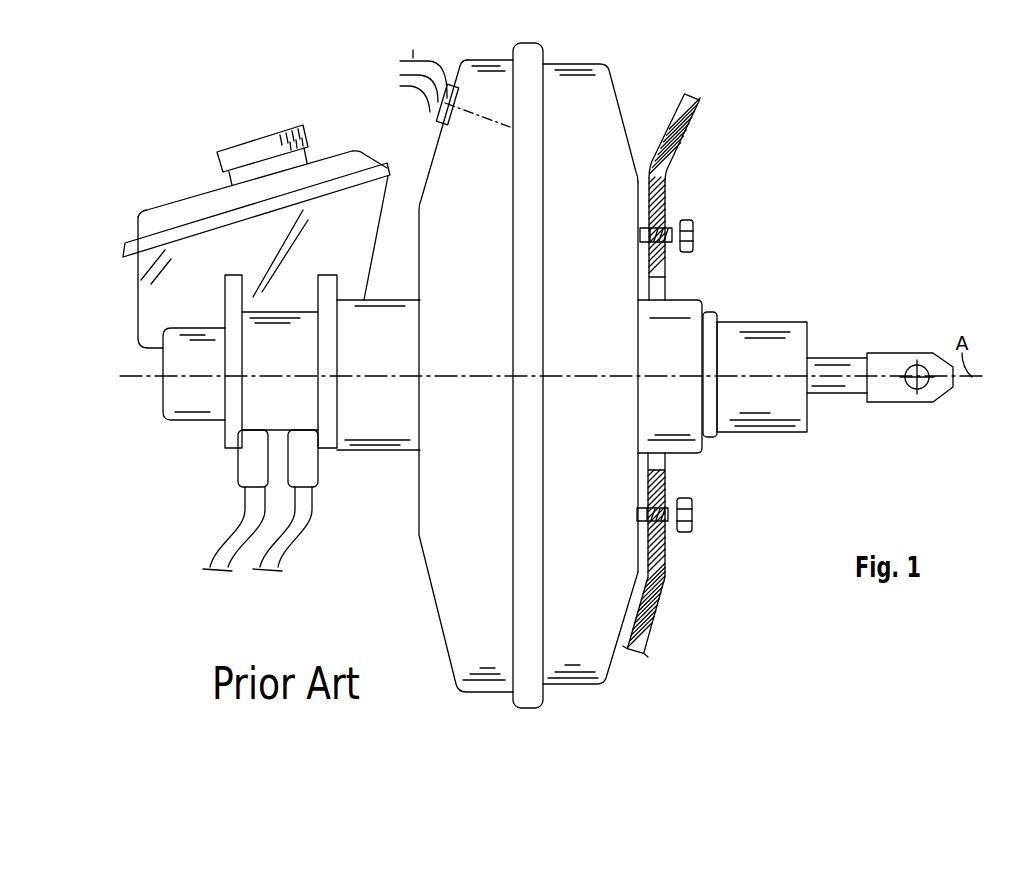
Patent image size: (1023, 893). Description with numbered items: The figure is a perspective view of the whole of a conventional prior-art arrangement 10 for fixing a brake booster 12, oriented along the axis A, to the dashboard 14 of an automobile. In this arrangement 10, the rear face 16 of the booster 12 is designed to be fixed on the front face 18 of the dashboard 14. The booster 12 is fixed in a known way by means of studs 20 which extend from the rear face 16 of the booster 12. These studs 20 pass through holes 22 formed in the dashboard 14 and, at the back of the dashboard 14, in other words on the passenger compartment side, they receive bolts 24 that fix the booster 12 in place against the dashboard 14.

The arrangement 10 is at (724, 162).
The brake booster 12 is at (563, 137).
The dashboard 14 is at (680, 113).
The rear face 16 is at (642, 200).
The front face 18 is at (650, 180).
The studs 20 is at (667, 228).
The holes 22 is at (665, 262).
The bolts 24 is at (694, 236).